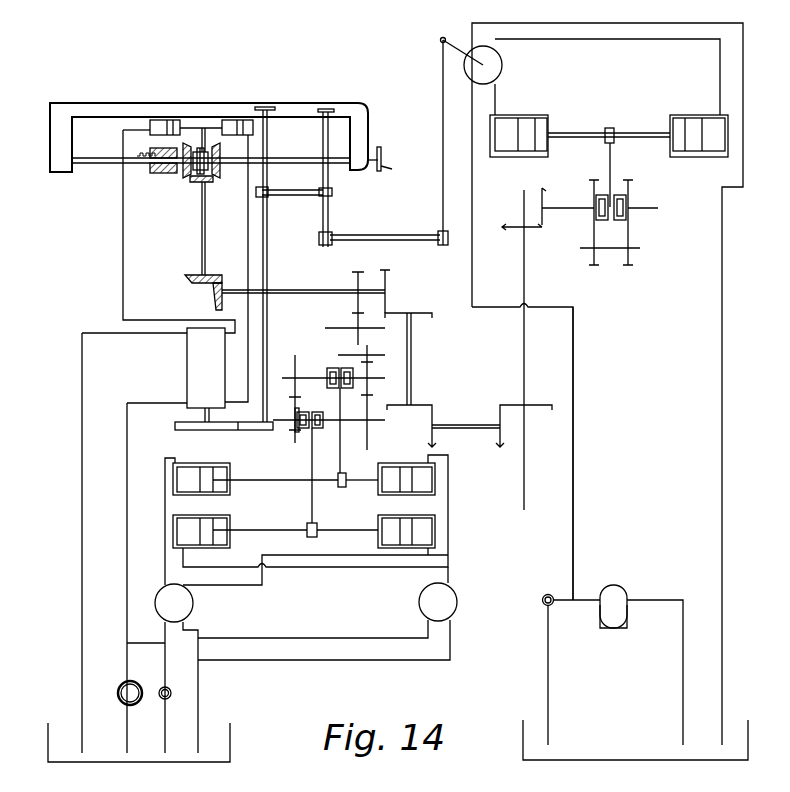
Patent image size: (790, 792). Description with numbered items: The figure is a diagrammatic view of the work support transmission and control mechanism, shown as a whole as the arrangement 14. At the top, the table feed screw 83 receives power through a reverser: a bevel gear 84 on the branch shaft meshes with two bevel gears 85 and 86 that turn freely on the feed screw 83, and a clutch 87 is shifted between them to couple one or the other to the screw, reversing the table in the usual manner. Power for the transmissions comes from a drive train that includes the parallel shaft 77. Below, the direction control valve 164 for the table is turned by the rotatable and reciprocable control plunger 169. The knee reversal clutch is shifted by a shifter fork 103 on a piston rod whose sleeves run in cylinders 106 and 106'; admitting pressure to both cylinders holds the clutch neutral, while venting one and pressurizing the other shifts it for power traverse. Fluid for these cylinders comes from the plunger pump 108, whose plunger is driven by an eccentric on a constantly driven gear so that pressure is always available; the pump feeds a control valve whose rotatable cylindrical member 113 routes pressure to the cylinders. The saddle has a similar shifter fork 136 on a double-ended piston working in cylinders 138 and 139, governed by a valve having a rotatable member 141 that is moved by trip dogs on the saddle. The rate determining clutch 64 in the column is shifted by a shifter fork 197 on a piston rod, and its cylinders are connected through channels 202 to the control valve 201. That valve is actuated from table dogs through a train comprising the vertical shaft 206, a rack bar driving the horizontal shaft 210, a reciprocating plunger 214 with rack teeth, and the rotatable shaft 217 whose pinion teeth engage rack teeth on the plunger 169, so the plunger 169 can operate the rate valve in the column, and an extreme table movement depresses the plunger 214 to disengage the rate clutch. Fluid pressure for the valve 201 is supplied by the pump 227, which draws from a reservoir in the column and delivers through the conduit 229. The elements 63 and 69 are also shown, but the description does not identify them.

The housing 14 is at (290, 103).
The table feed screw 83 is at (102, 163).
The bevel gear 84 is at (193, 182).
The bevel gear 85 is at (183, 148).
The bevel gear 86 is at (220, 150).
The clutch 87 is at (203, 183).
The reciprocating plunger 214 is at (328, 122).
The rotatable shaft 217 is at (310, 195).
The control plunger 169 is at (267, 272).
The horizontal shaft 210 is at (363, 235).
The vertical rotatable shaft 206 is at (443, 180).
The parallel shaft 77 is at (308, 293).
The valve 164 is at (187, 374).
The shifter fork 136 is at (340, 368).
The shifter fork 103 is at (313, 428).
The cylinder 138 is at (190, 473).
The cylinder 139 is at (417, 473).
The cylinder 106' is at (240, 522).
The cylinder 106 is at (394, 523).
The rotatable member 141 is at (190, 602).
The rotatable cylindrical member 113 is at (420, 601).
The plunger pump 108 is at (127, 686).
The control valve 201 is at (503, 66).
The channels 202 is at (497, 103).
The shifter fork 197 is at (612, 157).
The lever 63 is at (542, 192).
The rate determining clutch 64 is at (612, 220).
The shaft 69 is at (526, 280).
The conduit 229 is at (575, 512).
The pump 227 is at (620, 595).